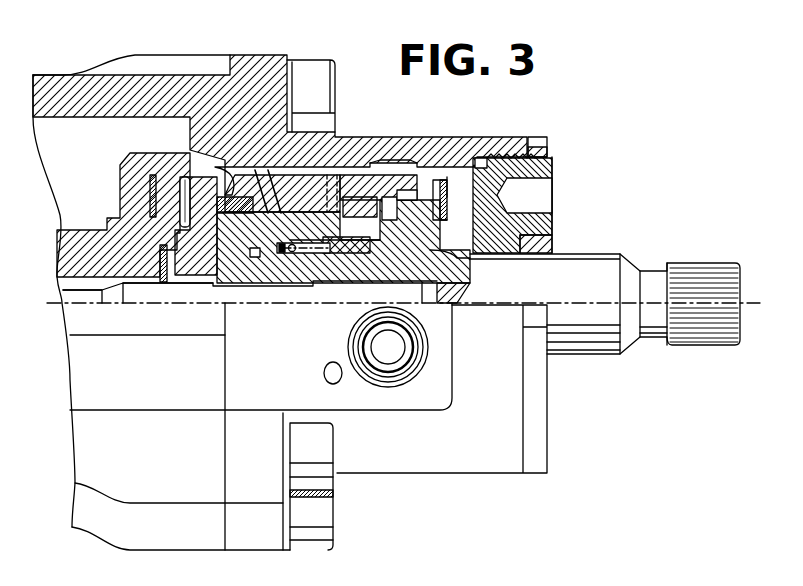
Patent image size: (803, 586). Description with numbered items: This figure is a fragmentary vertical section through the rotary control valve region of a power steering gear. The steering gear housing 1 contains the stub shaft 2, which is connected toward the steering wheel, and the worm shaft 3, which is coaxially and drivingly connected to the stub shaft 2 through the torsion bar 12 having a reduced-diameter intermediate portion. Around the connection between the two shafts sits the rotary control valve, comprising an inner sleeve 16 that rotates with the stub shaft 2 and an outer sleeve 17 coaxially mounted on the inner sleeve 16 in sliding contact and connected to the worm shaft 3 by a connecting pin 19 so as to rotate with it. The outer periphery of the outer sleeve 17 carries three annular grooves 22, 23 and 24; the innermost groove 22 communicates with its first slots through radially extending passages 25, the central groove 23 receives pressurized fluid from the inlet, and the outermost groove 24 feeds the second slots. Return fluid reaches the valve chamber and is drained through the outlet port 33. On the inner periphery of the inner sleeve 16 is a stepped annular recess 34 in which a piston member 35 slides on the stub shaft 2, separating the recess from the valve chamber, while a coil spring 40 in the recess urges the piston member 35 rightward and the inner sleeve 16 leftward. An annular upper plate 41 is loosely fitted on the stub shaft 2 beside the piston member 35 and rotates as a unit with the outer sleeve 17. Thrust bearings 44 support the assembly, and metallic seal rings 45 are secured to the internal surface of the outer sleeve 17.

The steering gear housing 1 is at (77, 82).
The stub shaft 2 is at (598, 256).
The worm shaft 3 is at (87, 243).
The torsion bar 12 is at (163, 290).
The inner sleeve 16 is at (212, 283).
The outer sleeve 17 is at (380, 180).
The connecting pin 19 is at (184, 175).
The annular groove 22 is at (265, 183).
The annular groove 23 is at (300, 165).
The annular groove 24 is at (337, 168).
The radially extending passages 25 is at (300, 180).
The outlet port 33 is at (402, 362).
The stepped annular recess 34 is at (288, 253).
The piston member 35 is at (390, 252).
The coil spring 40 is at (295, 252).
The annular upper plate 41 is at (457, 252).
The thrust bearings 44 is at (122, 165).
The metallic seal rings 45 is at (225, 183).